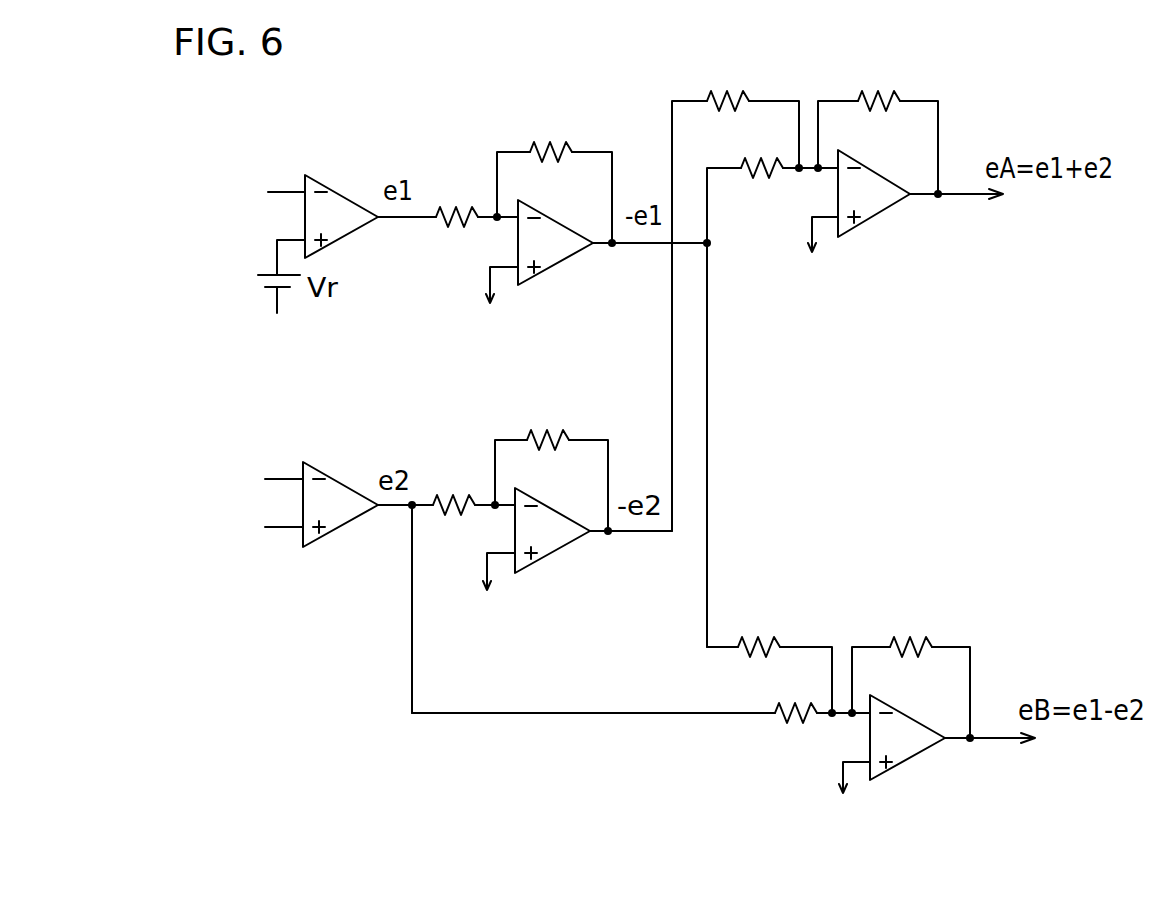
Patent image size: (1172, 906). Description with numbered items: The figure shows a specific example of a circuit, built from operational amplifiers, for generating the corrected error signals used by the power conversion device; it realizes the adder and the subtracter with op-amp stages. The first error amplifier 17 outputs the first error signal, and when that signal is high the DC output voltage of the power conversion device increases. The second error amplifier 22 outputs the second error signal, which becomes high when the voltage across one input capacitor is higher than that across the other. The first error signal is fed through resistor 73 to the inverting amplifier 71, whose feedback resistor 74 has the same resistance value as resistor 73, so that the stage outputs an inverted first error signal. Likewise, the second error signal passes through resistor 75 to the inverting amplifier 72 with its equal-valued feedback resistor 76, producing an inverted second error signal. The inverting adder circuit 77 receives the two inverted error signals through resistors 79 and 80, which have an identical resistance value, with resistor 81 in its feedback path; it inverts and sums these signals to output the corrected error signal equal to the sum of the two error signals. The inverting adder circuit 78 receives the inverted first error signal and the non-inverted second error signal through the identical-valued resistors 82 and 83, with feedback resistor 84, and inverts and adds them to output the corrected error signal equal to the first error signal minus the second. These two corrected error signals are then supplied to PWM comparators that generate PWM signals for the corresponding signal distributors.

The first error amplifier 17 is at (343, 193).
The second error amplifier 22 is at (343, 480).
The inverting amplifier 71 is at (583, 324).
The inverting amplifier 72 is at (580, 608).
The resistor 73 is at (442, 212).
The resistor 74 is at (560, 150).
The resistor 75 is at (440, 500).
The resistor 76 is at (555, 437).
The inverting adder circuit 77 is at (913, 270).
The inverting adder circuit 78 is at (947, 812).
The resistor 79 is at (738, 100).
The resistor 80 is at (765, 178).
The resistor 81 is at (888, 100).
The resistor 82 is at (768, 645).
The resistor 83 is at (795, 718).
The resistor 84 is at (920, 645).